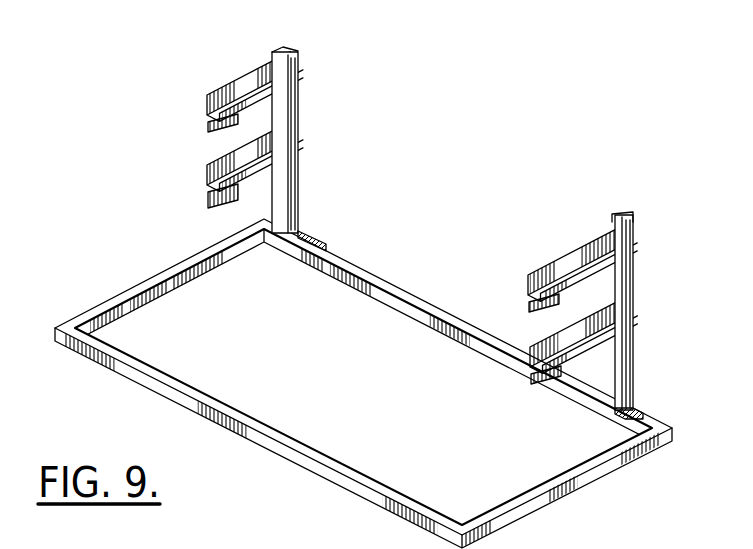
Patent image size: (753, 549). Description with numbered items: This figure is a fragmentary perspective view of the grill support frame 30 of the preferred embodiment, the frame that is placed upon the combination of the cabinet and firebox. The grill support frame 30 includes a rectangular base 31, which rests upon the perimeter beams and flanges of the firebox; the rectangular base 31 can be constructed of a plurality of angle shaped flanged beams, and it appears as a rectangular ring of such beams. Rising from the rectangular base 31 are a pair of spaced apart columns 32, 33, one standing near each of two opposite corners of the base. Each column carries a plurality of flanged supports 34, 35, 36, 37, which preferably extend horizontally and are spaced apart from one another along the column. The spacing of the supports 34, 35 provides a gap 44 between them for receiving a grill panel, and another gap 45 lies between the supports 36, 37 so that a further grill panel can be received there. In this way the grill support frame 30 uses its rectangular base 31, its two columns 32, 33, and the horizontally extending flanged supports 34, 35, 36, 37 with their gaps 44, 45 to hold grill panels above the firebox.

The grill support frame 30 is at (428, 93).
The rectangular base 31 is at (372, 500).
The column 32 is at (299, 110).
The column 33 is at (637, 256).
The flanged support 34 is at (247, 72).
The flanged support 35 is at (207, 139).
The flanged support 36 is at (208, 173).
The flanged support 37 is at (207, 226).
The gap 44 is at (202, 121).
The gap 45 is at (202, 198).